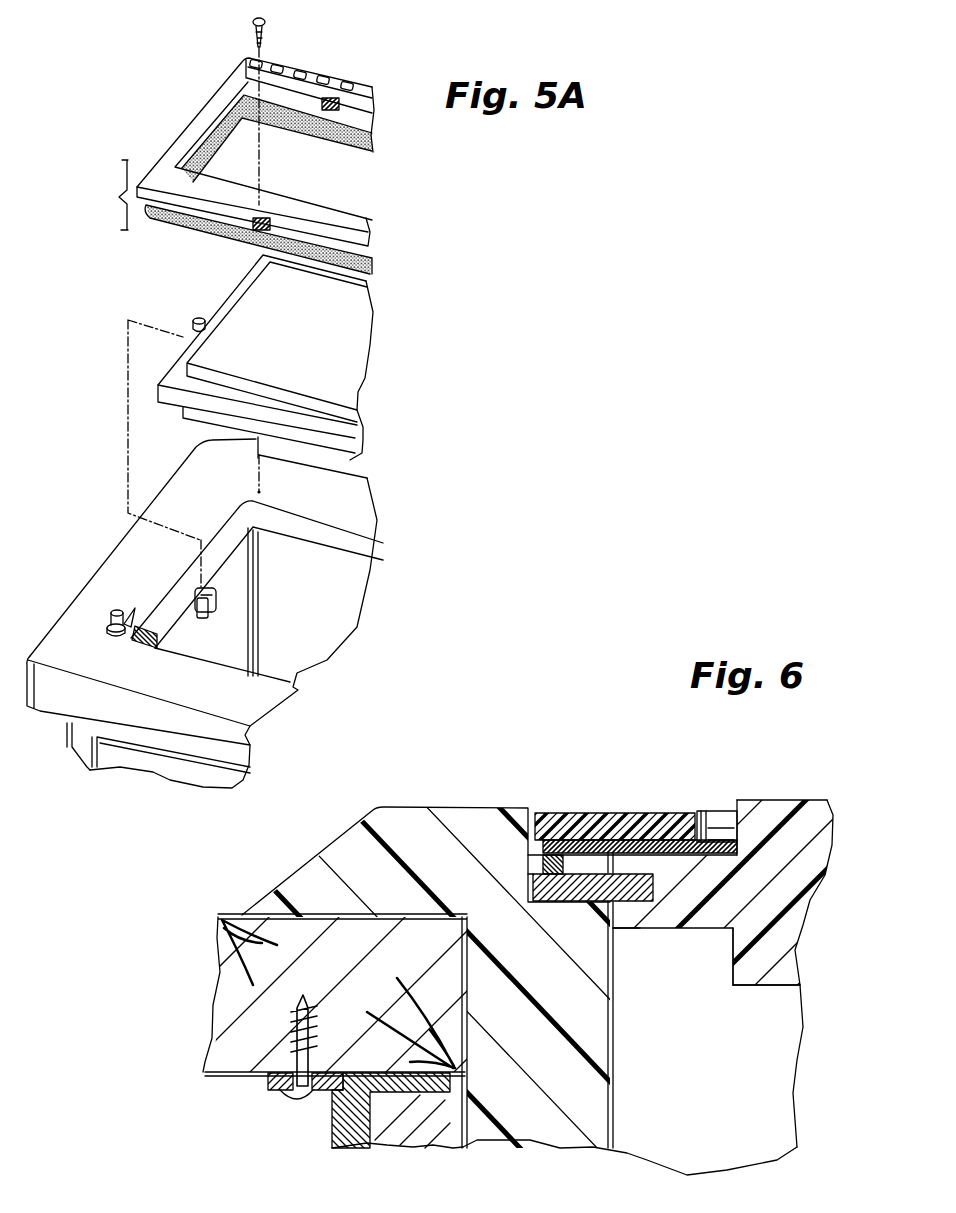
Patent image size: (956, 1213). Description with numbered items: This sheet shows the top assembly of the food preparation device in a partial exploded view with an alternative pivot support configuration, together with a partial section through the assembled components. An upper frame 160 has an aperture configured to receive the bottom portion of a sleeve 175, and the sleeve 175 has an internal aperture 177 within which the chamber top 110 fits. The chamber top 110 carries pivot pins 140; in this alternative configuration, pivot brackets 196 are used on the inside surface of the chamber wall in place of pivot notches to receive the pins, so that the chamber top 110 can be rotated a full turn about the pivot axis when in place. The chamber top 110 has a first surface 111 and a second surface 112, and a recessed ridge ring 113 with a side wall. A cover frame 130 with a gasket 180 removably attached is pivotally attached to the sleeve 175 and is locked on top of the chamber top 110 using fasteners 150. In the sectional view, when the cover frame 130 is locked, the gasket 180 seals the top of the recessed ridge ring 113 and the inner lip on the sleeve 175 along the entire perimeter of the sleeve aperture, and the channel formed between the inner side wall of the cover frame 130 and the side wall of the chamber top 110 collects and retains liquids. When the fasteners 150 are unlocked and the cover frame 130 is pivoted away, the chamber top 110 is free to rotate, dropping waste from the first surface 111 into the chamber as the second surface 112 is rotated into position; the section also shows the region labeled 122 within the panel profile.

In FIG. 5A, the chamber top 110 is at (226, 297).
In FIG. 6, the chamber top 110 is at (808, 772).
In FIG. 5A, the first surface 111 is at (332, 341).
In FIG. 6, the first surface 111 is at (785, 800).
In FIG. 6, the second surface 112 is at (757, 990).
In FIG. 6, the recessed ridge ring 113 is at (727, 960).
In FIG. 6, the channel in panel 122 is at (721, 819).
In FIG. 5A, the cover frame 130 is at (195, 122).
In FIG. 6, the cover frame 130 is at (582, 820).
In FIG. 5A, the pivot pins 140 is at (197, 319).
In FIG. 6, the pivot pins 140 is at (653, 880).
In FIG. 5A, the fasteners 150 is at (108, 625).
In FIG. 5A, the upper frame 160 is at (185, 486).
In FIG. 6, the upper frame 160 is at (237, 1073).
In FIG. 6, the sleeve 175 is at (447, 806).
In FIG. 6, the internal aperture 177 is at (663, 1016).
In FIG. 5A, the gasket 180 is at (184, 228).
In FIG. 6, the gasket 180 is at (643, 837).
In FIG. 5A, the pivot brackets 196 is at (206, 620).